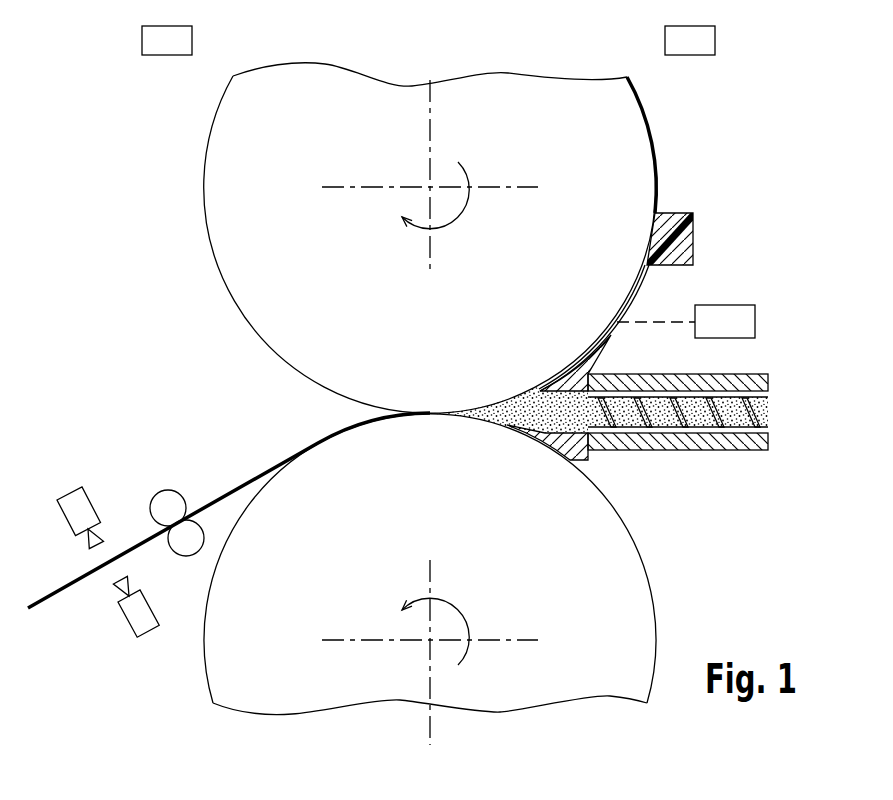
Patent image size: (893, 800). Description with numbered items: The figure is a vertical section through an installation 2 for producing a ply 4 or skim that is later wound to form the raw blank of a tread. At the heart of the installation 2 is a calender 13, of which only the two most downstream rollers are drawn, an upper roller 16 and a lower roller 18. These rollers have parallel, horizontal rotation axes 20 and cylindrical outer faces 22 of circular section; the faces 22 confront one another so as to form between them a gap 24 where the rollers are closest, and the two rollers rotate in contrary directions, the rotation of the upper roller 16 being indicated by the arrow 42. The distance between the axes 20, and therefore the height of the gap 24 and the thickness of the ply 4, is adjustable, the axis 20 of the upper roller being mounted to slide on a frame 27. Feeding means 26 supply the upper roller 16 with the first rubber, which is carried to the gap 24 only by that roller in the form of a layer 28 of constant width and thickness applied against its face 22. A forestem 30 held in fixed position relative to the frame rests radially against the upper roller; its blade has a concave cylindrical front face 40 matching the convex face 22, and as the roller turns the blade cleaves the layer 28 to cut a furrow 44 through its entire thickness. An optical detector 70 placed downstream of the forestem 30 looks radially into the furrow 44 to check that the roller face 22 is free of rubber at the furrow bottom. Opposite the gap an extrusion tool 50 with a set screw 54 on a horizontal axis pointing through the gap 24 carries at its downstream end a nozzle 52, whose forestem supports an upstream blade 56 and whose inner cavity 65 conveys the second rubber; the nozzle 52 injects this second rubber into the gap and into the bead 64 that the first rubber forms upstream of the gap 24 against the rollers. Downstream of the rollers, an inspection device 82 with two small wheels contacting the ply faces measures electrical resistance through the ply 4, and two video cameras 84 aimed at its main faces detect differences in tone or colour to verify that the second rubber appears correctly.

The installation 2 is at (118, 190).
The ply 4 is at (62, 596).
The calender 13 is at (656, 138).
The upper roller 16 is at (218, 110).
The lower roller 18 is at (655, 640).
The rotation axes 20 is at (430, 187).
The cylindrical outer faces 22 is at (197, 221).
The gap 24 is at (332, 411).
The feeding means 26 is at (697, 56).
The frame 27 is at (142, 41).
The layer 28 is at (656, 168).
The forestem 30 is at (695, 240).
The concave cylindrical front face 40 is at (640, 237).
The arrow 42 is at (463, 202).
The furrow 44 is at (645, 297).
The extrusion tool 50 is at (748, 454).
The nozzle 52 is at (580, 458).
The set screw 54 is at (760, 415).
The upstream blade 56 is at (592, 372).
The bead 64 is at (538, 428).
The inner cavity 65 is at (613, 420).
The optical detector 70 is at (737, 322).
The inspection device 82 is at (173, 490).
The video cameras 84 is at (95, 500).